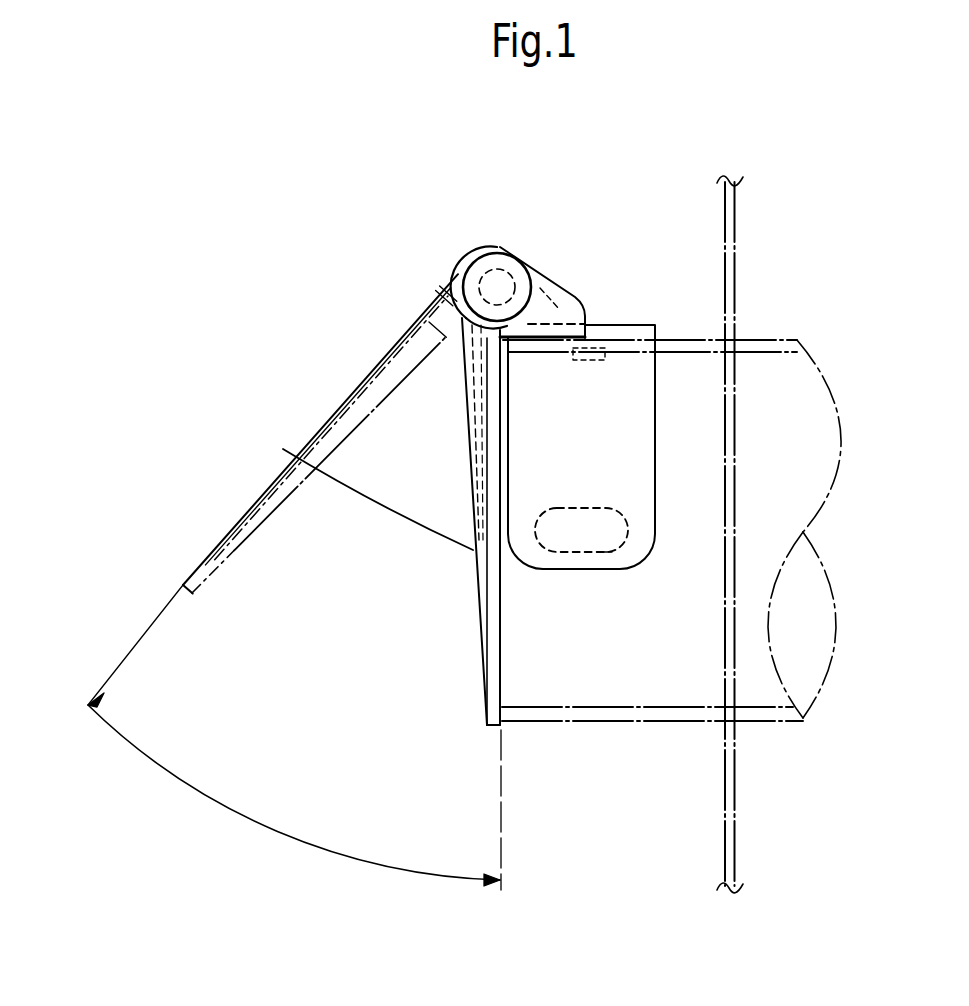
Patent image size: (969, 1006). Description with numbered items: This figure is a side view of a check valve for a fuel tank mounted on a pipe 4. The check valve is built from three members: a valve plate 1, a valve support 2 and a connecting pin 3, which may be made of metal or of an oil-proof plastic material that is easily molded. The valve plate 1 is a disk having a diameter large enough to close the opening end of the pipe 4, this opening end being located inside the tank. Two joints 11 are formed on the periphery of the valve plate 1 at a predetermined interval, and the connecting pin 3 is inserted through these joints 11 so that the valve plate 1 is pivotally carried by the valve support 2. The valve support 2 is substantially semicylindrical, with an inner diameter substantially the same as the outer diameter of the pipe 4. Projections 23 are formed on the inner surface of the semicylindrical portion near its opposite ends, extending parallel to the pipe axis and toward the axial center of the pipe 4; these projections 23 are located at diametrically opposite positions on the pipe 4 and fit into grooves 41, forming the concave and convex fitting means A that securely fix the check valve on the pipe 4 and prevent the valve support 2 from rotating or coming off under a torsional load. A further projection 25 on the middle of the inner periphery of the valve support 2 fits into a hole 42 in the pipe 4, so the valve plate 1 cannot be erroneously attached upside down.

The valve plate 1 is at (292, 457).
The valve support 2 is at (552, 283).
The connecting pin 3 is at (501, 287).
The pipe 4 is at (583, 716).
The joints 11 is at (458, 286).
The projections 23 is at (562, 540).
The projection 25 is at (573, 348).
The grooves 41 is at (606, 555).
The hole 42 is at (600, 358).
The concave and convex fitting means A is at (523, 560).